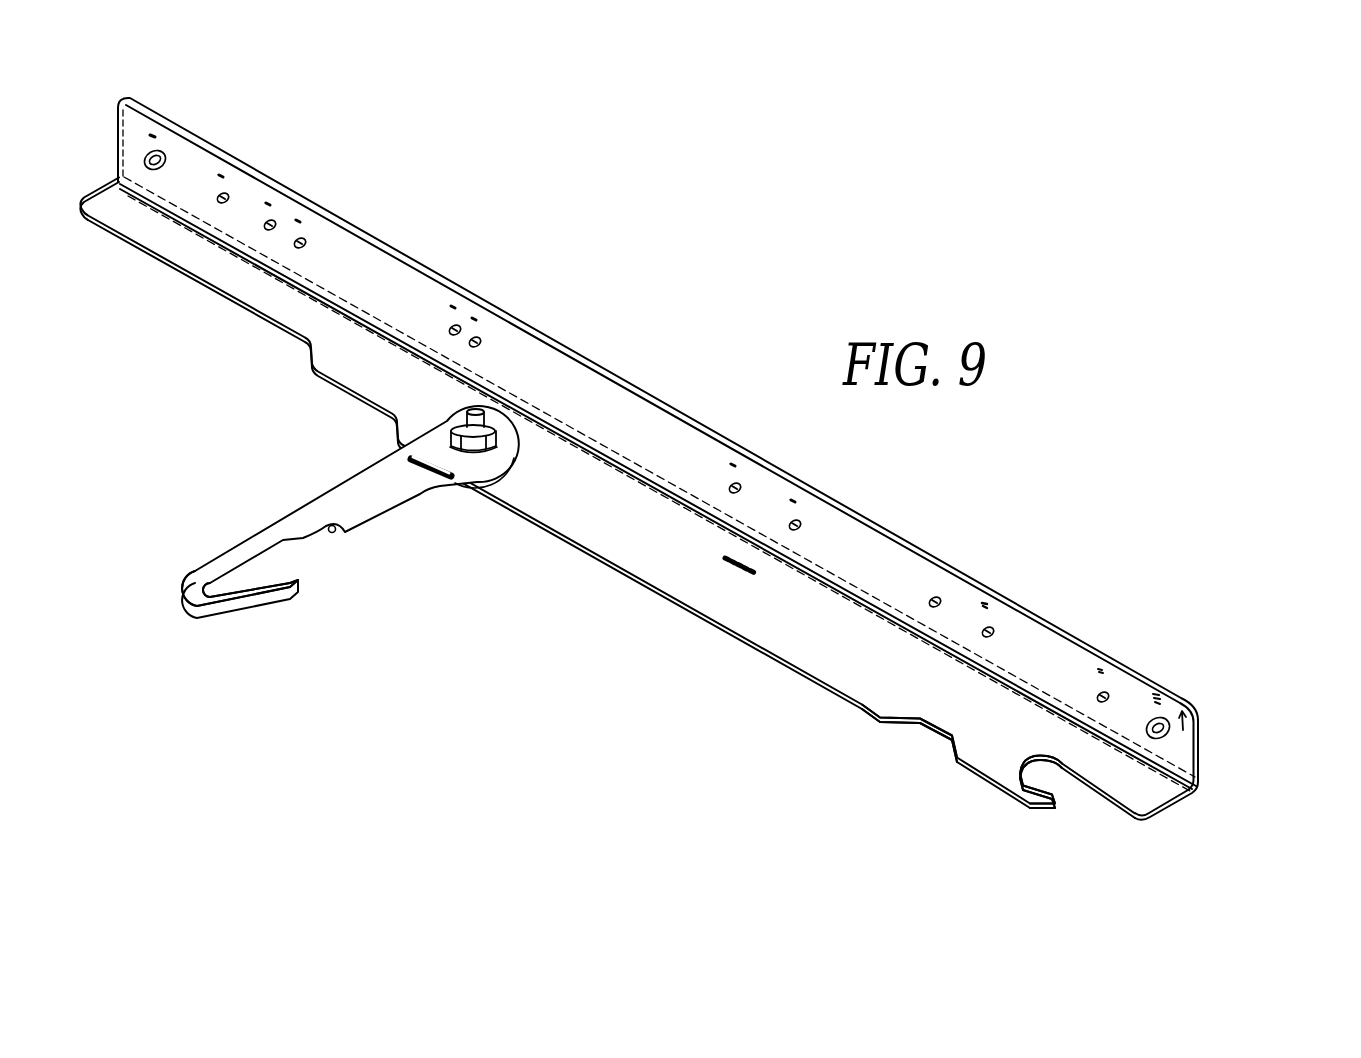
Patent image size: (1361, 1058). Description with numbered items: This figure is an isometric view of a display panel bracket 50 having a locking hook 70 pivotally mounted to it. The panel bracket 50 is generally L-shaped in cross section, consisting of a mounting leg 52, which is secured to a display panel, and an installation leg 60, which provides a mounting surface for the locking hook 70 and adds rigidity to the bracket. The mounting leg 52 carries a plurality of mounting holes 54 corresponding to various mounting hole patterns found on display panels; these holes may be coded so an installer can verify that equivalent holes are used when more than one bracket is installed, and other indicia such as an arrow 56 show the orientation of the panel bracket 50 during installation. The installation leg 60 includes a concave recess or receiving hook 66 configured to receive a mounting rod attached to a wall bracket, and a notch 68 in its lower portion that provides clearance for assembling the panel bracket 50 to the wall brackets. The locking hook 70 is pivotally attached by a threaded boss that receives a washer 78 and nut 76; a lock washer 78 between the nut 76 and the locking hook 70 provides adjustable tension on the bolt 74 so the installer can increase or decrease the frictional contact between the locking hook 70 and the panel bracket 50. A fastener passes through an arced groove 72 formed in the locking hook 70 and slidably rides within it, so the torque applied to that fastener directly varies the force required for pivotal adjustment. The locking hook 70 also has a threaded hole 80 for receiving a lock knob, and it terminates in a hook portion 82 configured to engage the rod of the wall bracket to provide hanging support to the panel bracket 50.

The display panel bracket 50 is at (430, 246).
The mounting leg 52 is at (590, 380).
The mounting holes 54 is at (221, 196).
The arrow 56 is at (1198, 727).
The installation leg 60 is at (643, 562).
The receiving hook 66 is at (1074, 799).
The notch 68 is at (920, 745).
The locking hook 70 is at (213, 550).
The arced groove 72 is at (400, 451).
The bolt 74 is at (490, 454).
The nut 76 is at (453, 438).
The washer 78 is at (472, 454).
The threaded hole 80 is at (350, 537).
The hook portion 82 is at (262, 591).